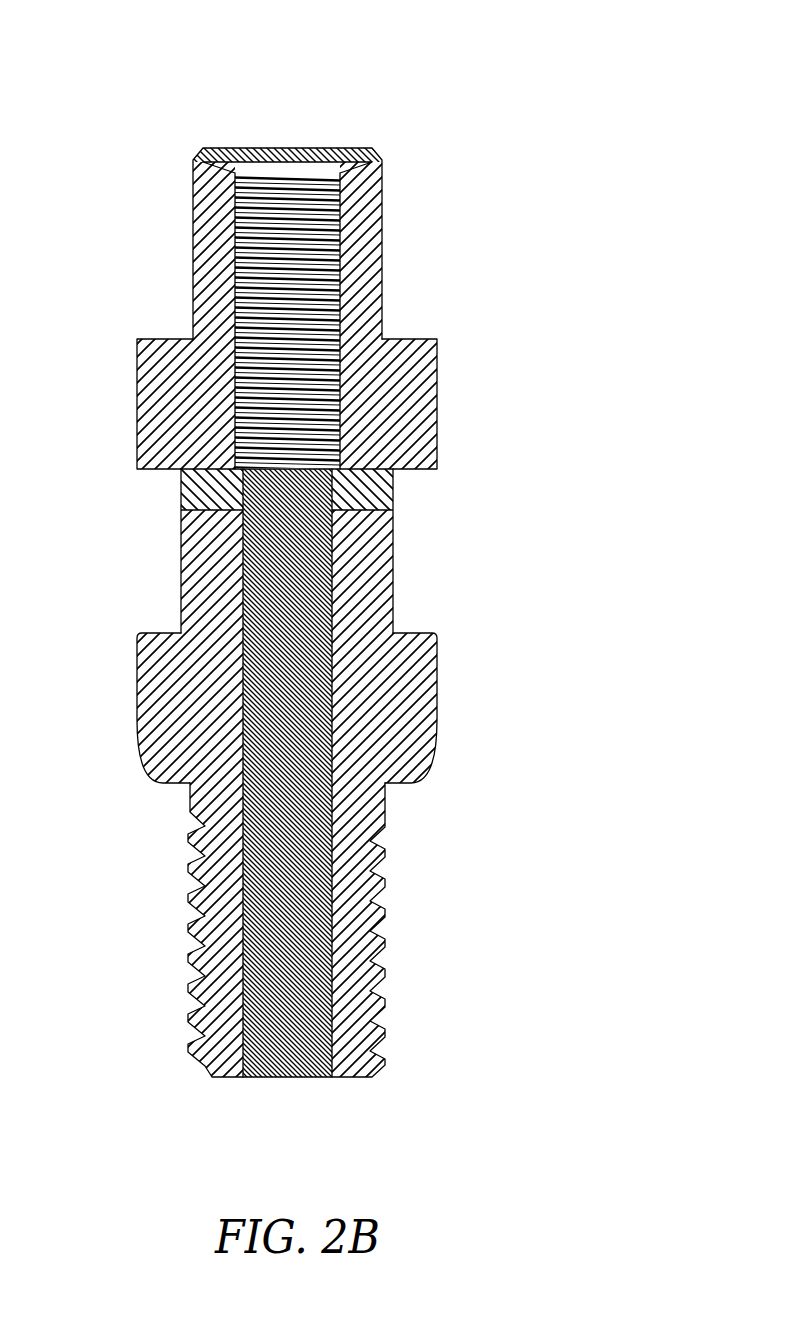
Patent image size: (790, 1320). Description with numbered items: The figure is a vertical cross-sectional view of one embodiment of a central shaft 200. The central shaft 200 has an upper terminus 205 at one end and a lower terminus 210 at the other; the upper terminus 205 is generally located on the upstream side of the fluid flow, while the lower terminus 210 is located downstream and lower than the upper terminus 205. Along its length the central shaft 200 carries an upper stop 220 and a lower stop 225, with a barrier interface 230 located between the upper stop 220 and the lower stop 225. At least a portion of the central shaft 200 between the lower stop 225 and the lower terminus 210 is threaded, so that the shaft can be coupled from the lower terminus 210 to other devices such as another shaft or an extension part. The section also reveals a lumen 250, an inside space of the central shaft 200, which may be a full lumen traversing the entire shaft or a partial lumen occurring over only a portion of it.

The central shaft 200 is at (517, 69).
The upper terminus 205 is at (382, 160).
The lumen 250 is at (235, 276).
The upper stop 220 is at (437, 388).
The barrier interface 230 is at (394, 572).
The lower stop 225 is at (437, 687).
The lower terminus 210 is at (385, 1038).